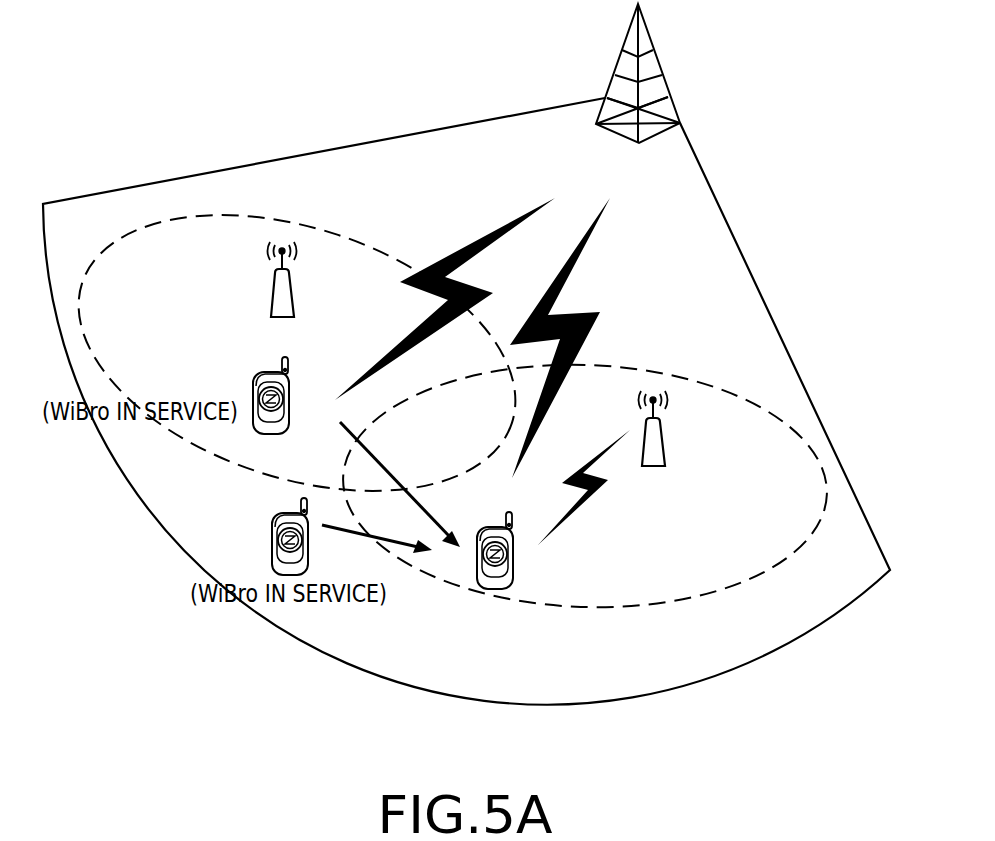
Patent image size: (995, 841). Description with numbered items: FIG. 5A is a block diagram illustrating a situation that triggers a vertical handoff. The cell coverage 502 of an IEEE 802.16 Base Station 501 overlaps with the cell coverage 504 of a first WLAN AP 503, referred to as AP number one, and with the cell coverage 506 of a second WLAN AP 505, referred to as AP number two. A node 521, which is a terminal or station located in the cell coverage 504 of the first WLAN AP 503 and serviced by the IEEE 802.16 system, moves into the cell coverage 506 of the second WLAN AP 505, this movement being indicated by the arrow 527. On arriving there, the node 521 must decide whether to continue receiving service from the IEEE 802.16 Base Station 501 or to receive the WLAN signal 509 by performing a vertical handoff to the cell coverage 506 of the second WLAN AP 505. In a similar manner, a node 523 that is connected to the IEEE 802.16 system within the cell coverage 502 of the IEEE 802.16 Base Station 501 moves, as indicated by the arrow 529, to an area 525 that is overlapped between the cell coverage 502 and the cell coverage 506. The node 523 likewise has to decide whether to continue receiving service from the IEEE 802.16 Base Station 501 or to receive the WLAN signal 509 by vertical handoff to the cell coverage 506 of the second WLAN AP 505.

The IEEE 802.16 Base Station 501 is at (596, 88).
The cell coverage of the IEEE 802.16 Base Station 502 is at (744, 238).
The first WLAN AP 503 is at (246, 295).
The cell coverage of the first WLAN AP 504 is at (187, 230).
The second WLAN AP 505 is at (724, 444).
The cell coverage of the second WLAN AP 506 is at (796, 427).
The WLAN signal 509 is at (584, 487).
The node 521 is at (292, 400).
The node 523 is at (268, 536).
The overlapped area 525 is at (516, 553).
The movement of the node 527 is at (425, 500).
The movement of the node 529 is at (328, 528).